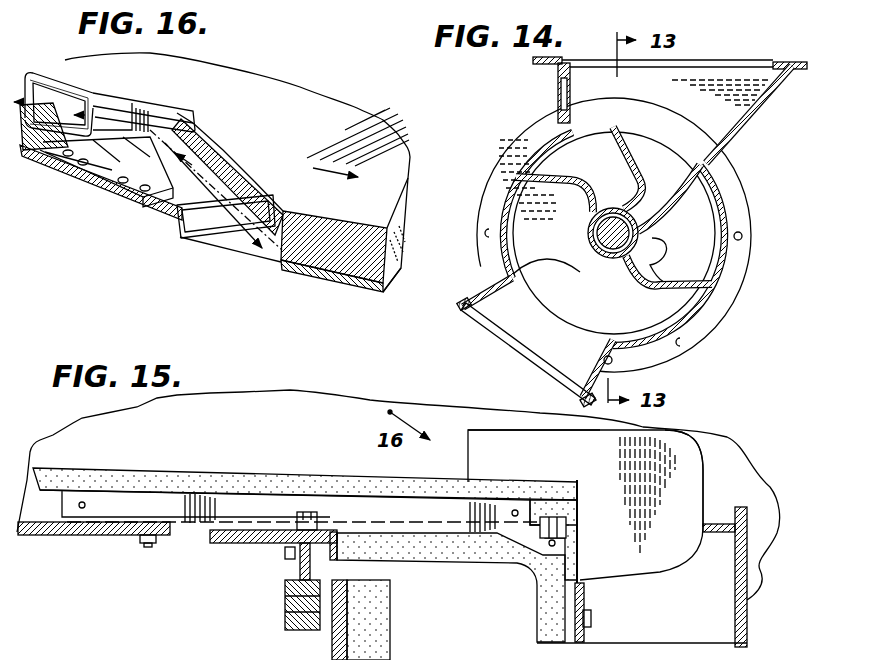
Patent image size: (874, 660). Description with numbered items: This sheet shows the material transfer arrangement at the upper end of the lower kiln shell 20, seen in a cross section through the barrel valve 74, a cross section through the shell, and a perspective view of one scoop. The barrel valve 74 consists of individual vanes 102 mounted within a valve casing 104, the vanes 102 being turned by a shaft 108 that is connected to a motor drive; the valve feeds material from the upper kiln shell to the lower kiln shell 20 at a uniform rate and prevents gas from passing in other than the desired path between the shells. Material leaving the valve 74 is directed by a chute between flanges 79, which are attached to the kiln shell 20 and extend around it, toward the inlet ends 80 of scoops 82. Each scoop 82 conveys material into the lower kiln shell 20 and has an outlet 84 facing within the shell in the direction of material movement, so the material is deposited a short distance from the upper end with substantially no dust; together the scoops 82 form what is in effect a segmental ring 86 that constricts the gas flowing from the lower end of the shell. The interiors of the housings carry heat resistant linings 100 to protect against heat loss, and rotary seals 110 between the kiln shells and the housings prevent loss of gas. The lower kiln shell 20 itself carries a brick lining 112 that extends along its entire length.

In FIG. 16, the lower kiln shell 20 is at (333, 276).
In FIG. 15, the lower kiln shell 20 is at (131, 537).
In FIG. 14, the barrel valve 74 is at (533, 118).
In FIG. 15, the flanges 79 is at (591, 630).
In FIG. 16, the inlet ends 80 is at (212, 223).
In FIG. 16, the scoops 82 is at (207, 88).
In FIG. 15, the scoops 82 is at (709, 462).
In FIG. 16, the outlets 84 is at (57, 72).
In FIG. 15, the outlets 84 is at (467, 459).
In FIG. 15, the segmental type of ring 86 is at (518, 430).
In FIG. 15, the heat resistant linings 100 is at (390, 632).
In FIG. 14, the vanes 102 is at (612, 162).
In FIG. 14, the valve casing 104 is at (722, 270).
In FIG. 14, the shaft 108 is at (623, 226).
In FIG. 15, the rotary seals 110 is at (287, 565).
In FIG. 15, the brick lining 112 is at (222, 472).